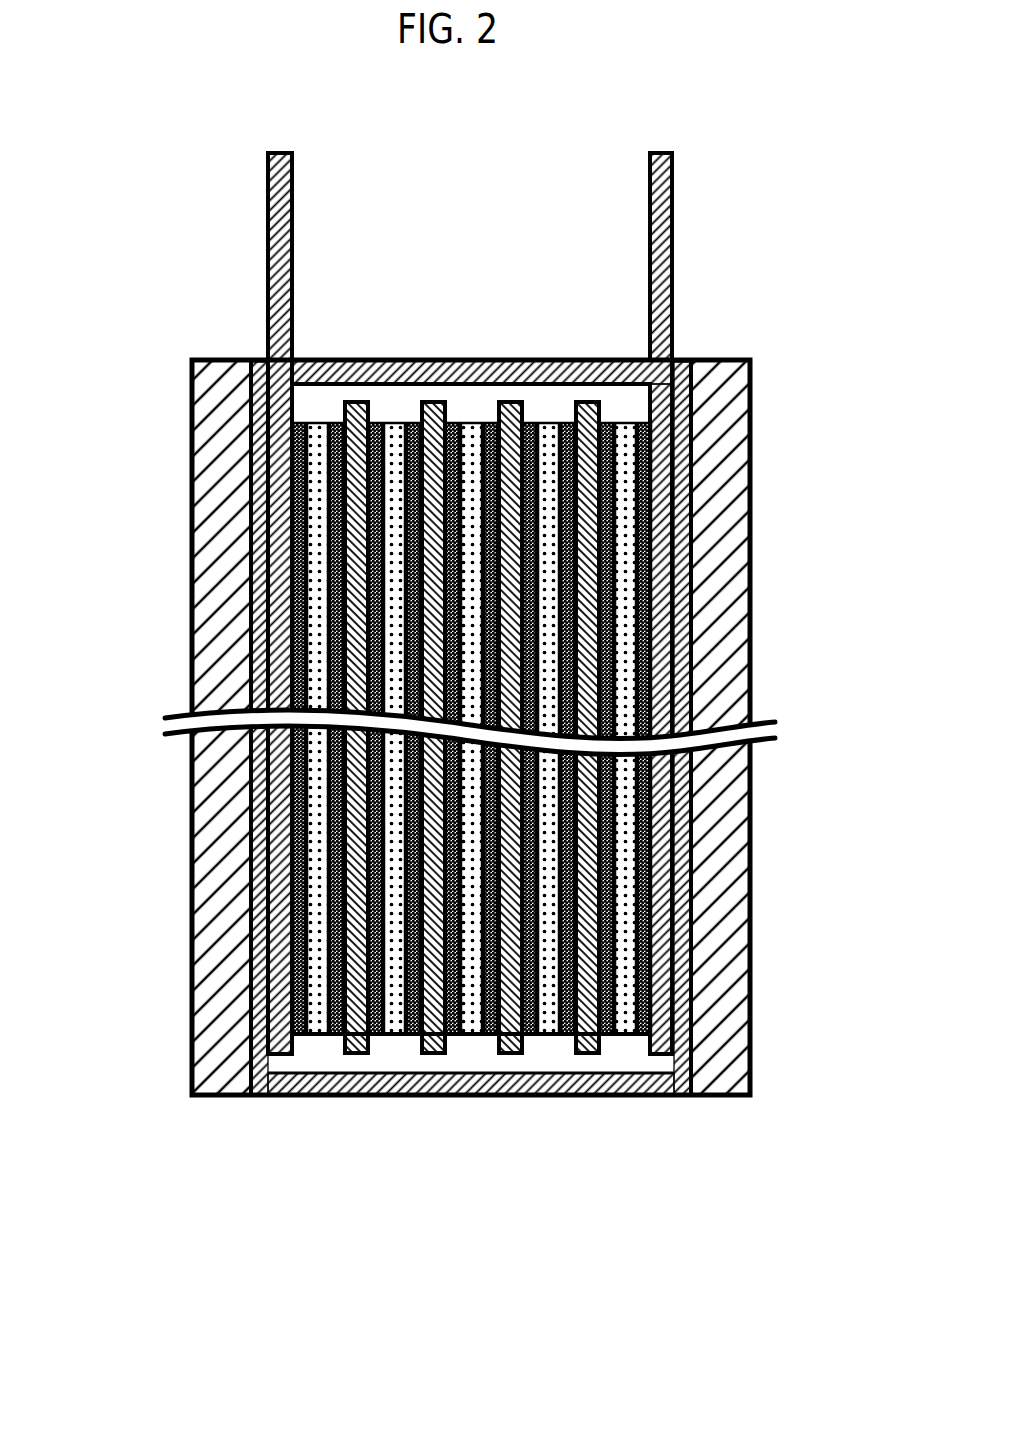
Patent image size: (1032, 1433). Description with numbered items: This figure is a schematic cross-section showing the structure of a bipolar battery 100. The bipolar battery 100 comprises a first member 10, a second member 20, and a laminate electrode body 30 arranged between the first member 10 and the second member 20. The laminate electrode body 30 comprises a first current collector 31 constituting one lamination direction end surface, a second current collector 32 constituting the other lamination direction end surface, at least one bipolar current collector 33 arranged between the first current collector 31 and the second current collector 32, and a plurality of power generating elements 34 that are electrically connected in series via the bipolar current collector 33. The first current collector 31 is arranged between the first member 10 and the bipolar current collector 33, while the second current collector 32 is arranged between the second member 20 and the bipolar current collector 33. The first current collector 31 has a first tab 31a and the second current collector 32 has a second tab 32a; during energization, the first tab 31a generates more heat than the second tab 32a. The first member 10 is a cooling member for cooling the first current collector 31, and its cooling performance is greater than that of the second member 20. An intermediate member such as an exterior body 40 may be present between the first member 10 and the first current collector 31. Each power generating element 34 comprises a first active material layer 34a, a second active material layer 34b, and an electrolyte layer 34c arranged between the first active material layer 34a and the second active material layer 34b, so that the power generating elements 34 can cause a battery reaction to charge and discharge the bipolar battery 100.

The bipolar battery 100 is at (495, 110).
The first member 10 is at (193, 520).
The second member 20 is at (750, 520).
The laminate electrode body 30 is at (470, 787).
The first current collector 31 is at (285, 456).
The first tab 31a is at (268, 213).
The second current collector 32 is at (658, 456).
The second tab 32a is at (672, 213).
The bipolar current collector 33 is at (356, 400).
The power generating element 34 is at (470, 788).
The first active material layer 34a is at (297, 1037).
The second active material layer 34b is at (338, 1037).
The electrolyte layer 34c is at (318, 1037).
The exterior body 40 is at (237, 1095).